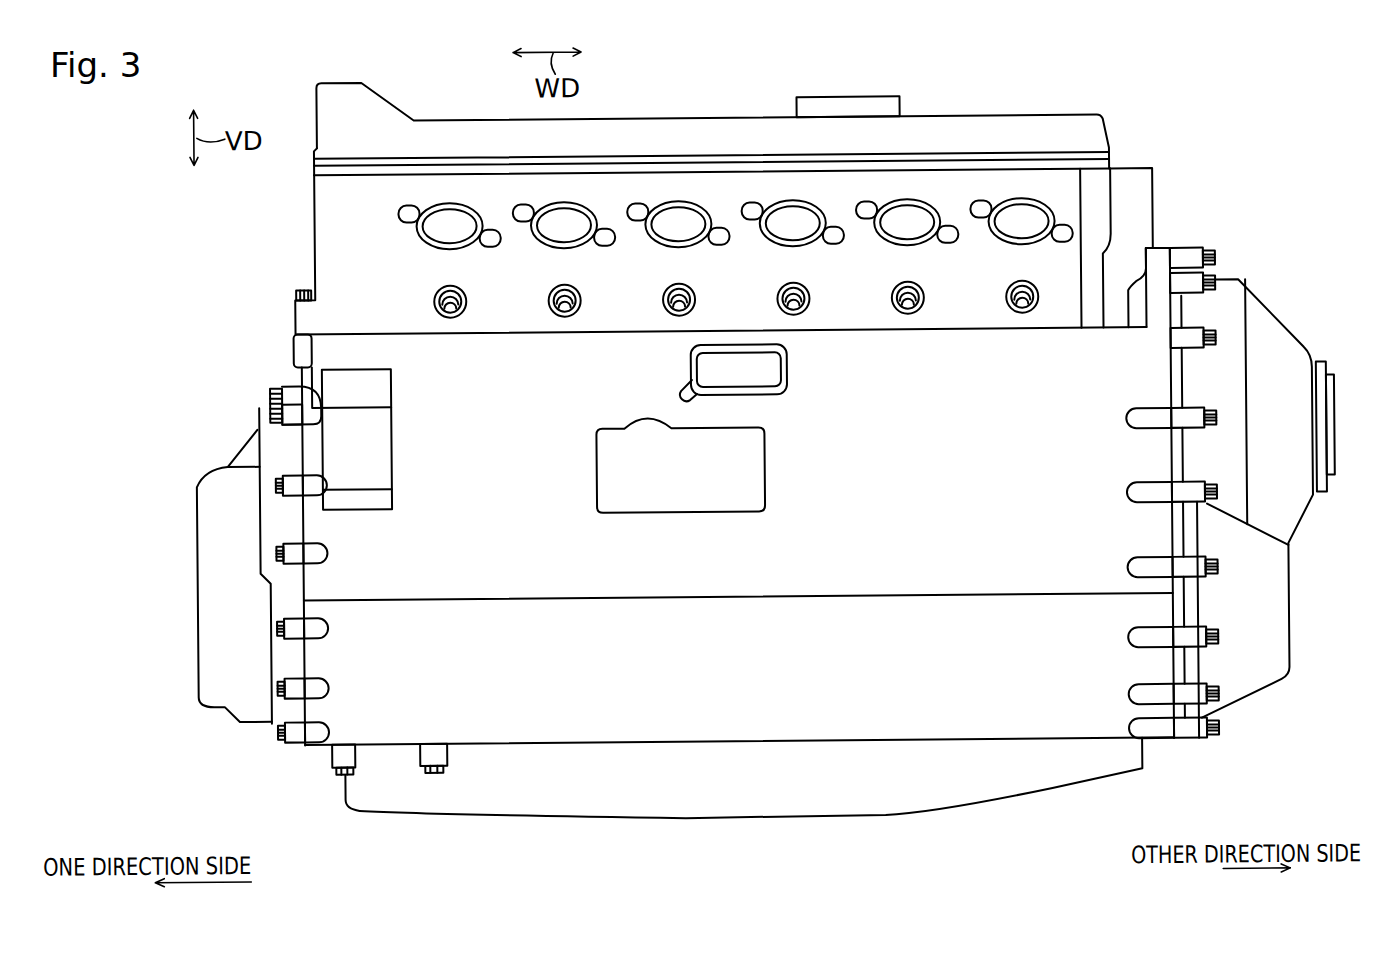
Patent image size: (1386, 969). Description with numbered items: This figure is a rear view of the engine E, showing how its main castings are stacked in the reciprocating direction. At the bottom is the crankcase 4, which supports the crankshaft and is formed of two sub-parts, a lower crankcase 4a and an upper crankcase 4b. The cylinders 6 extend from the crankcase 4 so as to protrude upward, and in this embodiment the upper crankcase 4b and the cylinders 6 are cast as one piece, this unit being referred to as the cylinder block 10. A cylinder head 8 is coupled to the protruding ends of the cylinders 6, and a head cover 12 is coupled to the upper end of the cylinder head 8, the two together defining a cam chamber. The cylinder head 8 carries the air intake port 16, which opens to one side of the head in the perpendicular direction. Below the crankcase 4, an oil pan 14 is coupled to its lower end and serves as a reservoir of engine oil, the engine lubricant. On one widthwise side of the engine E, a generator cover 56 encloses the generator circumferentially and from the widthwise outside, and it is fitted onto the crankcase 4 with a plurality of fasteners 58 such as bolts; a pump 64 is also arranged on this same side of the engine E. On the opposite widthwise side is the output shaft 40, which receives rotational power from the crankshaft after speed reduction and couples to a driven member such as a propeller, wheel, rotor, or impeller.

The engine E is at (1178, 123).
The head cover 12 is at (1102, 122).
The cylinder head 8 is at (338, 196).
The air intake port 16 is at (1058, 219).
The cylinder block 10 is at (263, 582).
The cylinders 6 is at (430, 355).
The pump 64 is at (328, 438).
The crankcase 4 is at (255, 767).
The lower crankcase 4a is at (322, 728).
The upper crankcase 4b is at (343, 796).
The oil pan 14 is at (1076, 786).
The generator cover 56 is at (197, 639).
The fasteners 58 is at (270, 413).
The output shaft 40 is at (1335, 431).